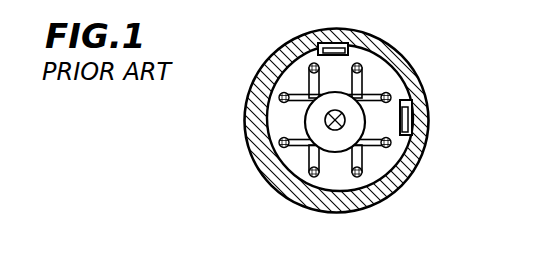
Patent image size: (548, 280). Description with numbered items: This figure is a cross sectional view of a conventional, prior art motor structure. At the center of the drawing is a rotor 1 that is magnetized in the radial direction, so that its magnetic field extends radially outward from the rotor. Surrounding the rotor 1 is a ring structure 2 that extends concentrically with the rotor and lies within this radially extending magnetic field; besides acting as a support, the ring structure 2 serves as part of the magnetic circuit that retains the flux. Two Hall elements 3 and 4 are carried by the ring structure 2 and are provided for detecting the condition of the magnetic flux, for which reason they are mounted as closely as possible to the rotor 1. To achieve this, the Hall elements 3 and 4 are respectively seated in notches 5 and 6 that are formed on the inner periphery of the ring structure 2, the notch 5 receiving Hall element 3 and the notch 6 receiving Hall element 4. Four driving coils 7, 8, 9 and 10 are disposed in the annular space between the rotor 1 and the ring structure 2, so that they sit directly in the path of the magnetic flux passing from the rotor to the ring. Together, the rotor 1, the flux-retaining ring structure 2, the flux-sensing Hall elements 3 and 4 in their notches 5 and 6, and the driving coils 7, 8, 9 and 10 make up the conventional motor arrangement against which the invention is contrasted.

The rotor 1 is at (367, 122).
The ring structure 2 is at (293, 190).
The Hall element 3 is at (335, 44).
The Hall element 4 is at (408, 118).
The notch 5 is at (341, 52).
The notch 6 is at (424, 152).
The driving coil 7 is at (277, 93).
The driving coil 8 is at (281, 146).
The driving coil 9 is at (318, 177).
The driving coil 10 is at (360, 177).